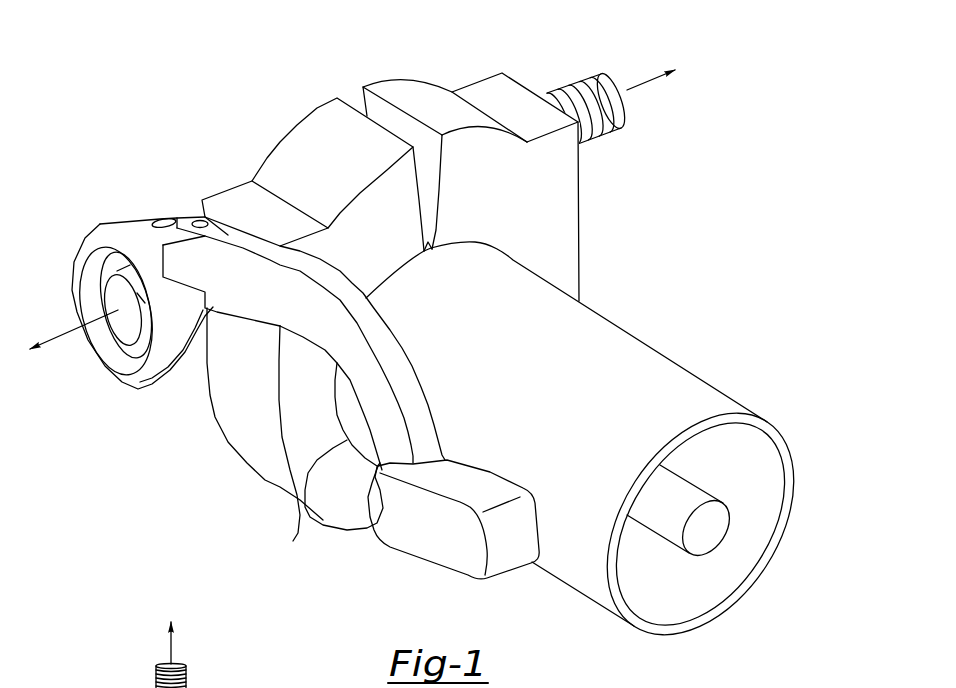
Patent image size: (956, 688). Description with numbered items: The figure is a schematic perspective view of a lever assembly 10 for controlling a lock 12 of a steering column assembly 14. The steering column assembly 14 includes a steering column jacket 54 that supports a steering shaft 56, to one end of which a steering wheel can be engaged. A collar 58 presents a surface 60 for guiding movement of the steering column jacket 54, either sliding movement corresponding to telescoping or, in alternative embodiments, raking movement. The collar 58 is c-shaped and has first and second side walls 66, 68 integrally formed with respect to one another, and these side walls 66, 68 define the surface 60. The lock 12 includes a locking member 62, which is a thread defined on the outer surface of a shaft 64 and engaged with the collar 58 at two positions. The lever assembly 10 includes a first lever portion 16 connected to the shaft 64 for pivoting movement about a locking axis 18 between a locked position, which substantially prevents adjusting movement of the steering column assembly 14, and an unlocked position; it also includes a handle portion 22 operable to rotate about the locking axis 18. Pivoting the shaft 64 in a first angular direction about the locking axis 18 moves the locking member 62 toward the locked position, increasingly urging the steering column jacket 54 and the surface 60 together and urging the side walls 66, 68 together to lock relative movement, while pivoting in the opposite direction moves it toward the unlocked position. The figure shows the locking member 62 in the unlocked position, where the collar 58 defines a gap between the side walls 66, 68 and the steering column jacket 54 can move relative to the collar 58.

The lever assembly 10 is at (150, 416).
The lock 12 is at (458, 75).
The steering column assembly 14 is at (782, 413).
The first lever portion 16 is at (118, 208).
The locking axis 18 is at (646, 83).
The handle portion 22 is at (452, 532).
The steering column jacket 54 is at (633, 372).
The steering shaft 56 is at (708, 528).
The collar 58 is at (291, 91).
The surface 60 is at (305, 522).
The locking member 62 is at (557, 90).
The shaft 64 is at (641, 158).
The first side wall 66 is at (295, 147).
The second side wall 68 is at (422, 97).